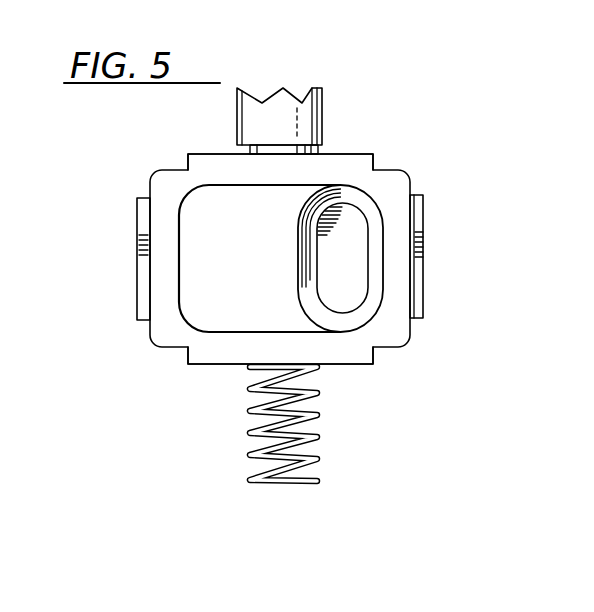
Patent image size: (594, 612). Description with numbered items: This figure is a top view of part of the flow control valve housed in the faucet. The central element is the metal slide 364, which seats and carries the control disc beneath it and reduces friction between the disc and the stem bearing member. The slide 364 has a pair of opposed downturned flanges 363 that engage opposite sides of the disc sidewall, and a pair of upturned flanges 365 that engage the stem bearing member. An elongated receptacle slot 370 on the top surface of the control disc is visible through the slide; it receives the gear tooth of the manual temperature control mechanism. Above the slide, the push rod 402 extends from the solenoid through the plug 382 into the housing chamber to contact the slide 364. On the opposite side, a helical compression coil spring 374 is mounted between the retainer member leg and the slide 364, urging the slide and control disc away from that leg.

The downturned flanges 363 is at (217, 152).
The metal slide 364 is at (413, 176).
The upturned flanges 365 is at (424, 268).
The receptacle slot 370 is at (347, 293).
The helical compression coil spring 374 is at (293, 484).
The plug 382 is at (323, 92).
The push rod 402 is at (310, 148).